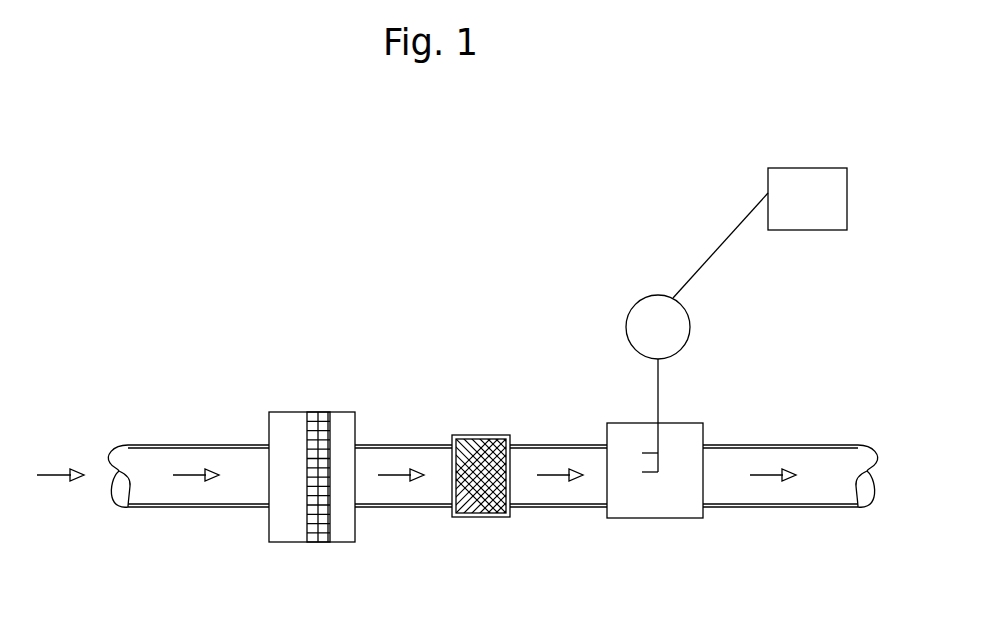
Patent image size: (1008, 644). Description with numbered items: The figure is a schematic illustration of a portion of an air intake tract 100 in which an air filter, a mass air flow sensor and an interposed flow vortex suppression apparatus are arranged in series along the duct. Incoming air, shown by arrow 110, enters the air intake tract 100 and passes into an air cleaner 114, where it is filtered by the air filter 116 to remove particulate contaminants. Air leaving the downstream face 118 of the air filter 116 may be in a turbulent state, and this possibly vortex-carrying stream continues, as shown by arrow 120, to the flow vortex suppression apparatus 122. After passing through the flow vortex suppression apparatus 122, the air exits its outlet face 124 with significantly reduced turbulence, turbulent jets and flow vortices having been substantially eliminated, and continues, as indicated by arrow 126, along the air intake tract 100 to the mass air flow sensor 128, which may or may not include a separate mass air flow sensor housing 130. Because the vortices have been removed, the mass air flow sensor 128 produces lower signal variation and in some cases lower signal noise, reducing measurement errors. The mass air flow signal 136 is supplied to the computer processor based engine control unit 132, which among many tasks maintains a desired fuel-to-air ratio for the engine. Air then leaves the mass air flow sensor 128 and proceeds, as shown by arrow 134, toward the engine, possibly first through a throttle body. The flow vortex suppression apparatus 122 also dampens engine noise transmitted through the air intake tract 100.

The air intake tract 100 is at (628, 129).
The air flow arrow 110 is at (52, 477).
The air cleaner 114 is at (285, 412).
The air filter 116 is at (315, 420).
The downstream face 118 is at (307, 523).
The arrow 120 is at (390, 477).
The flow vortex suppression apparatus 122 is at (478, 435).
The outlet face 124 is at (512, 447).
The arrow 126 is at (550, 477).
The mass air flow sensor 128 is at (650, 453).
The mass air flow sensor housing 130 is at (672, 518).
The engine control unit (ECU) 132 is at (805, 230).
The arrow 134 is at (765, 478).
The mass air flow signal 136 is at (713, 250).